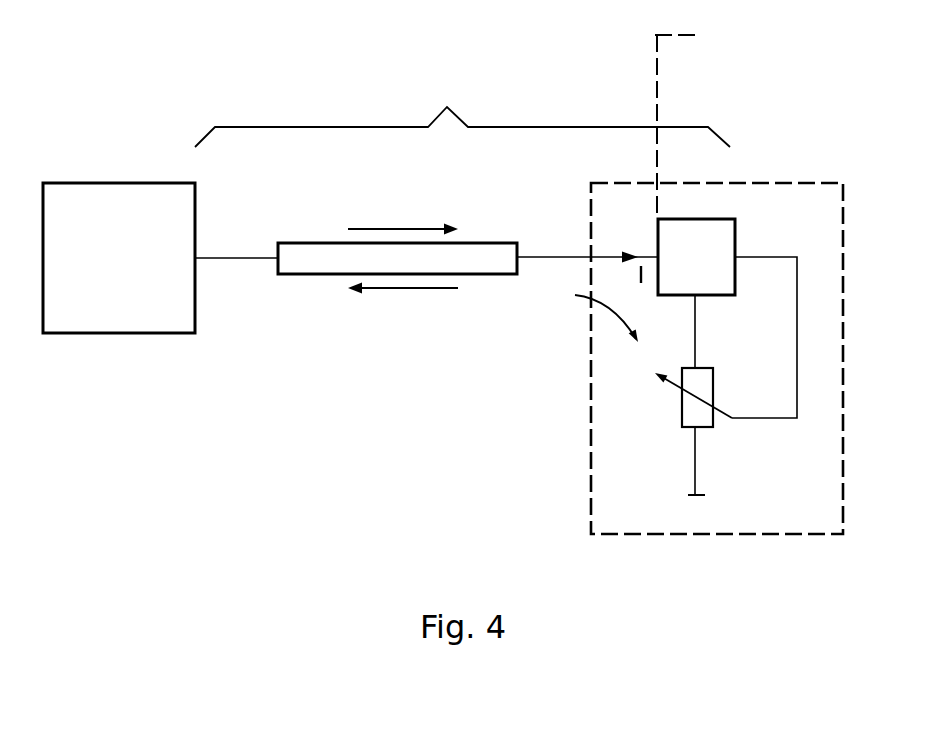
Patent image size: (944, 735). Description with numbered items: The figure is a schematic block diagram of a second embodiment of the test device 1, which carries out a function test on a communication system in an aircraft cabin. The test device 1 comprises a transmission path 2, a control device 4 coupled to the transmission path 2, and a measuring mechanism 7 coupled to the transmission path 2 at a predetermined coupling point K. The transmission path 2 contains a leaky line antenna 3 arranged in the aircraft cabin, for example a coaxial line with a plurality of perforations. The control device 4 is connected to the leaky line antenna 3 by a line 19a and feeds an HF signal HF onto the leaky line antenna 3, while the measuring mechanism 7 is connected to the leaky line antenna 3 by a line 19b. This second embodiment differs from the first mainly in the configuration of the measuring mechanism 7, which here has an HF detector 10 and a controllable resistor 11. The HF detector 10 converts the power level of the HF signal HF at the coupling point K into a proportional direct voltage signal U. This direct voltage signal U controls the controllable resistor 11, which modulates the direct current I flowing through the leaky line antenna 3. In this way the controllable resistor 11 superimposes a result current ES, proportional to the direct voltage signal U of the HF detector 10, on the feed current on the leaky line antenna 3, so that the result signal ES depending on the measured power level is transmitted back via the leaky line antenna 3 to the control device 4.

The test device 1 is at (780, 57).
The transmission path 2 is at (462, 113).
The leaky line antenna 3 is at (325, 243).
The control device 4 is at (100, 183).
The measuring mechanism 7 is at (793, 183).
The HF detector 10 is at (735, 240).
The controllable resistor 11 is at (682, 415).
The line 19a is at (240, 258).
The line 19b is at (562, 257).
The coupling point K is at (676, 115).
The HF signal HF is at (386, 228).
The result signal ES is at (412, 289).
The direct current I is at (608, 308).
The direct voltage signal U is at (797, 356).